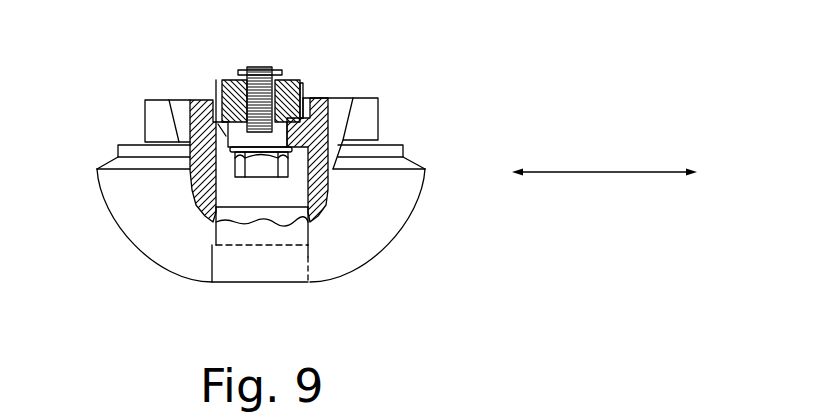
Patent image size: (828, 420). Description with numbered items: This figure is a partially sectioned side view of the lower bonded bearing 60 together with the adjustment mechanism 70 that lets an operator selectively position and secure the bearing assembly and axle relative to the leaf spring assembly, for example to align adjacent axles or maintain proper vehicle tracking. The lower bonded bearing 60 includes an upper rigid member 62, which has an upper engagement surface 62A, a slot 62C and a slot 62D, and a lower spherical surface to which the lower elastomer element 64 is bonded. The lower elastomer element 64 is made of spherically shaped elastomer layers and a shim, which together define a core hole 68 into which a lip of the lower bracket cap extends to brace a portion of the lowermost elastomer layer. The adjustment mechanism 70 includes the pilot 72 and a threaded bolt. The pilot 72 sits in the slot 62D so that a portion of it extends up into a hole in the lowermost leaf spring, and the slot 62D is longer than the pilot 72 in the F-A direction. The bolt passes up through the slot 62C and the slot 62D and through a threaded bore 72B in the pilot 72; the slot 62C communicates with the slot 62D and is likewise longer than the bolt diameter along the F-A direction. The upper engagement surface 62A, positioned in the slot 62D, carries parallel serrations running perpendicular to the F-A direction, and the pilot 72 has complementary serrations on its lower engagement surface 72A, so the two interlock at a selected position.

The lower bonded bearing 60 is at (456, 47).
The upper rigid member 62 is at (367, 122).
The upper engagement surface 62A is at (305, 94).
The slot 62C is at (288, 124).
The slot 62D is at (216, 100).
The lower elastomer element 64 is at (412, 225).
The core hole 68 is at (210, 210).
The adjustment mechanism 70 is at (203, 72).
The pilot 72 is at (302, 84).
The lower engagement surface 72A is at (224, 135).
The threaded bore 72B is at (292, 78).